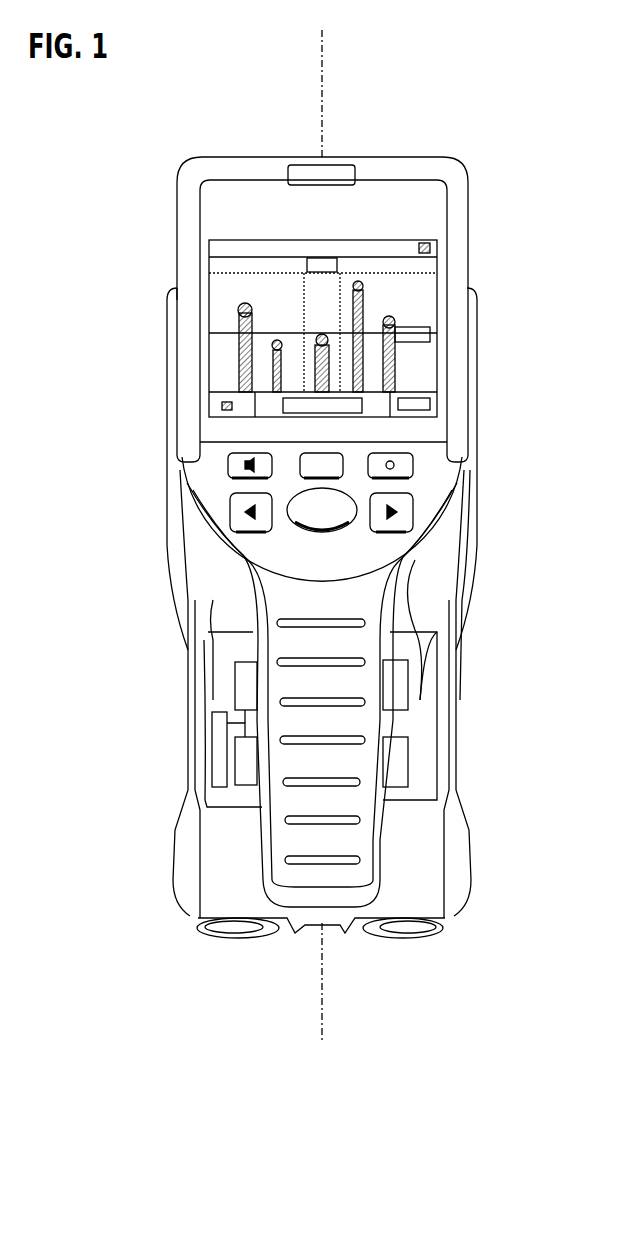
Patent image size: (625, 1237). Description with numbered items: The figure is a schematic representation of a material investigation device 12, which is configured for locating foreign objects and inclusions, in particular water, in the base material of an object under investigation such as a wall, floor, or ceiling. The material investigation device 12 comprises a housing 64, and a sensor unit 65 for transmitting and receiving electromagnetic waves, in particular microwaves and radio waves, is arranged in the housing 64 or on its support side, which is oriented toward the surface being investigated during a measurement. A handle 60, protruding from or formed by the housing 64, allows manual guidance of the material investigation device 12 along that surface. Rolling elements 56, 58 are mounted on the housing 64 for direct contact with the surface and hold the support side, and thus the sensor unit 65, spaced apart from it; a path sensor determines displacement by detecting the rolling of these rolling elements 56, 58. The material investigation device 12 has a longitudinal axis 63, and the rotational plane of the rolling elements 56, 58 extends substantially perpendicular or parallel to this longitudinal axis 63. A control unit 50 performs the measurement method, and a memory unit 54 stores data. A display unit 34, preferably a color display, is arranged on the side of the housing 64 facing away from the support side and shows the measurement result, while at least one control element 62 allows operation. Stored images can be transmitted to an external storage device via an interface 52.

The material investigation device 12 is at (476, 162).
The display unit 34 is at (437, 287).
The control unit 50 is at (397, 688).
The interface 52 is at (212, 777).
The memory unit 54 is at (397, 775).
The rolling element 56 is at (210, 938).
The rolling element 58 is at (430, 938).
The handle 60 is at (337, 843).
The control element 62 is at (405, 503).
The longitudinal axis 63 is at (322, 62).
The housing 64 is at (167, 500).
The sensor unit 65 is at (415, 595).